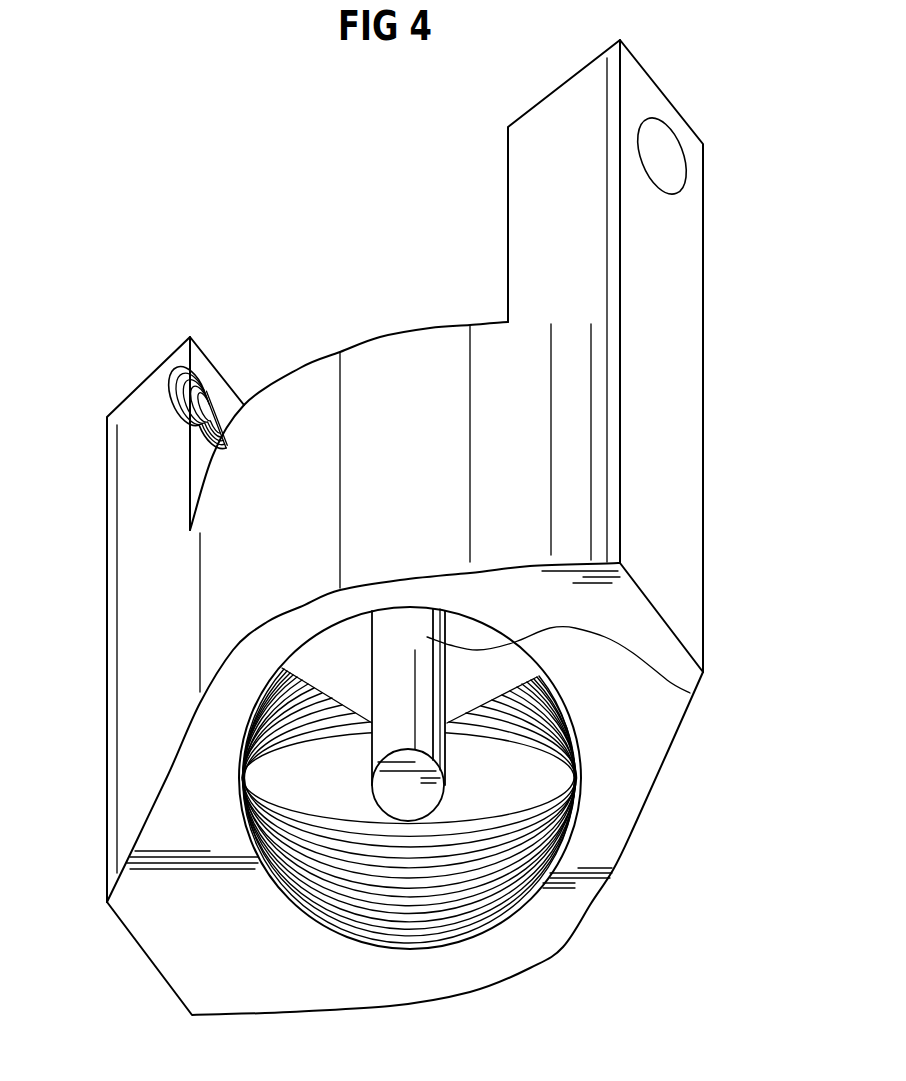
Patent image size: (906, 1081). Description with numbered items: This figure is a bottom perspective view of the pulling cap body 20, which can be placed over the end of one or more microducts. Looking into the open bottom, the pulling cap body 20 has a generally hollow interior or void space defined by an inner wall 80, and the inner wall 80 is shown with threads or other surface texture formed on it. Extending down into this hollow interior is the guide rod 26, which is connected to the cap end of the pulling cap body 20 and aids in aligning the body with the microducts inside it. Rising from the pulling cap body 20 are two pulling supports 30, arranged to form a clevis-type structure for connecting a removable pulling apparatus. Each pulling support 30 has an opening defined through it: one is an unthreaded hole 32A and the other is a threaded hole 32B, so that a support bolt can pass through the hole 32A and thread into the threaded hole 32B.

The pulling cap body 20 is at (627, 738).
The guide rod 26 is at (690, 693).
The pulling support 30 is at (670, 250).
The hole 32A is at (652, 138).
The threaded hole 32B is at (212, 410).
The inner wall 80 is at (503, 882).